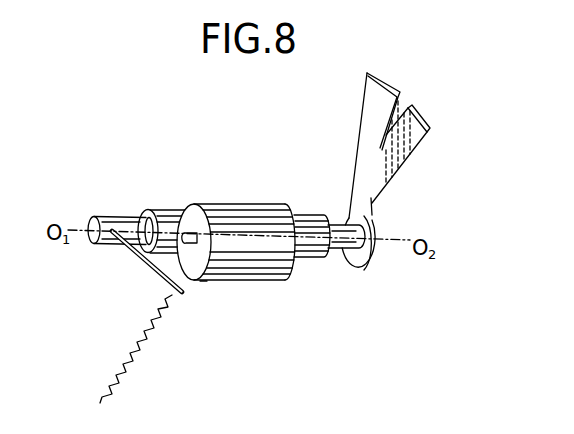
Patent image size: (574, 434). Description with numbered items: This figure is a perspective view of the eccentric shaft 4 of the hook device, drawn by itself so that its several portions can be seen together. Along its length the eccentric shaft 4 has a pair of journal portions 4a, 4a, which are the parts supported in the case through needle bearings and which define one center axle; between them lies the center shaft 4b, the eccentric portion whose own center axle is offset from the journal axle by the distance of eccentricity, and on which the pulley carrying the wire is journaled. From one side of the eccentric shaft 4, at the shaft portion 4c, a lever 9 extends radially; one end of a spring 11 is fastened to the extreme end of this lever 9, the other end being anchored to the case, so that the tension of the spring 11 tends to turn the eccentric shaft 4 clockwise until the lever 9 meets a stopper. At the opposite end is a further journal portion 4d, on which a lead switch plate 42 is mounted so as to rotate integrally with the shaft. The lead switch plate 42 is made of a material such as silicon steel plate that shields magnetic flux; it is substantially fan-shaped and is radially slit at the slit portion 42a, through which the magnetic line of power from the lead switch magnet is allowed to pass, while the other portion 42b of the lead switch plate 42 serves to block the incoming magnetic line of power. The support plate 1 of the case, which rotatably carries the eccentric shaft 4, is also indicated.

The eccentric shaft 4 is at (96, 204).
The journal portion 4a is at (163, 210).
The center shaft 4b is at (238, 205).
The shaft portion 4c is at (120, 215).
The journal portion 4d is at (343, 248).
The support plate 1 is at (208, 278).
The lever 9 is at (160, 274).
The spring 11 is at (157, 318).
The lead switch plate 42 is at (412, 171).
The slit portion 42a is at (402, 103).
The shielding portion 42b is at (418, 140).